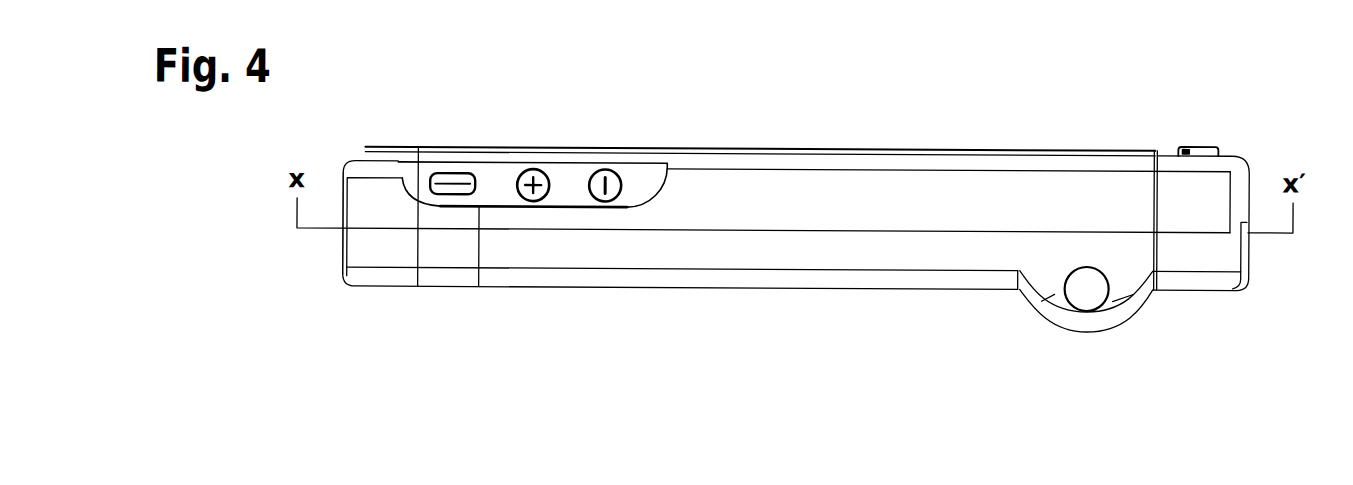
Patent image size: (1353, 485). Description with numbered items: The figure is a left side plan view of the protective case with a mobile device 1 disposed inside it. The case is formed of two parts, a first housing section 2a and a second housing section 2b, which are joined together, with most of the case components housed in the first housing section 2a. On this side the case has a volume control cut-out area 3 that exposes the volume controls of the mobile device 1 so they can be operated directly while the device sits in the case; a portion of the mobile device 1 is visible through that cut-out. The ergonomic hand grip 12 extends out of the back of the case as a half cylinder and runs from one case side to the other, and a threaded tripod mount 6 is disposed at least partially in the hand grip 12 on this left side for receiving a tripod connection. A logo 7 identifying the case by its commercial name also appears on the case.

The mobile device 1 is at (648, 177).
The first housing section 2a is at (785, 288).
The second housing section 2b is at (479, 300).
The volume control cut-out area 3 is at (667, 126).
The tripod mount 6 is at (1092, 289).
The logo 7 is at (1223, 143).
The hand grip 12 is at (1043, 317).